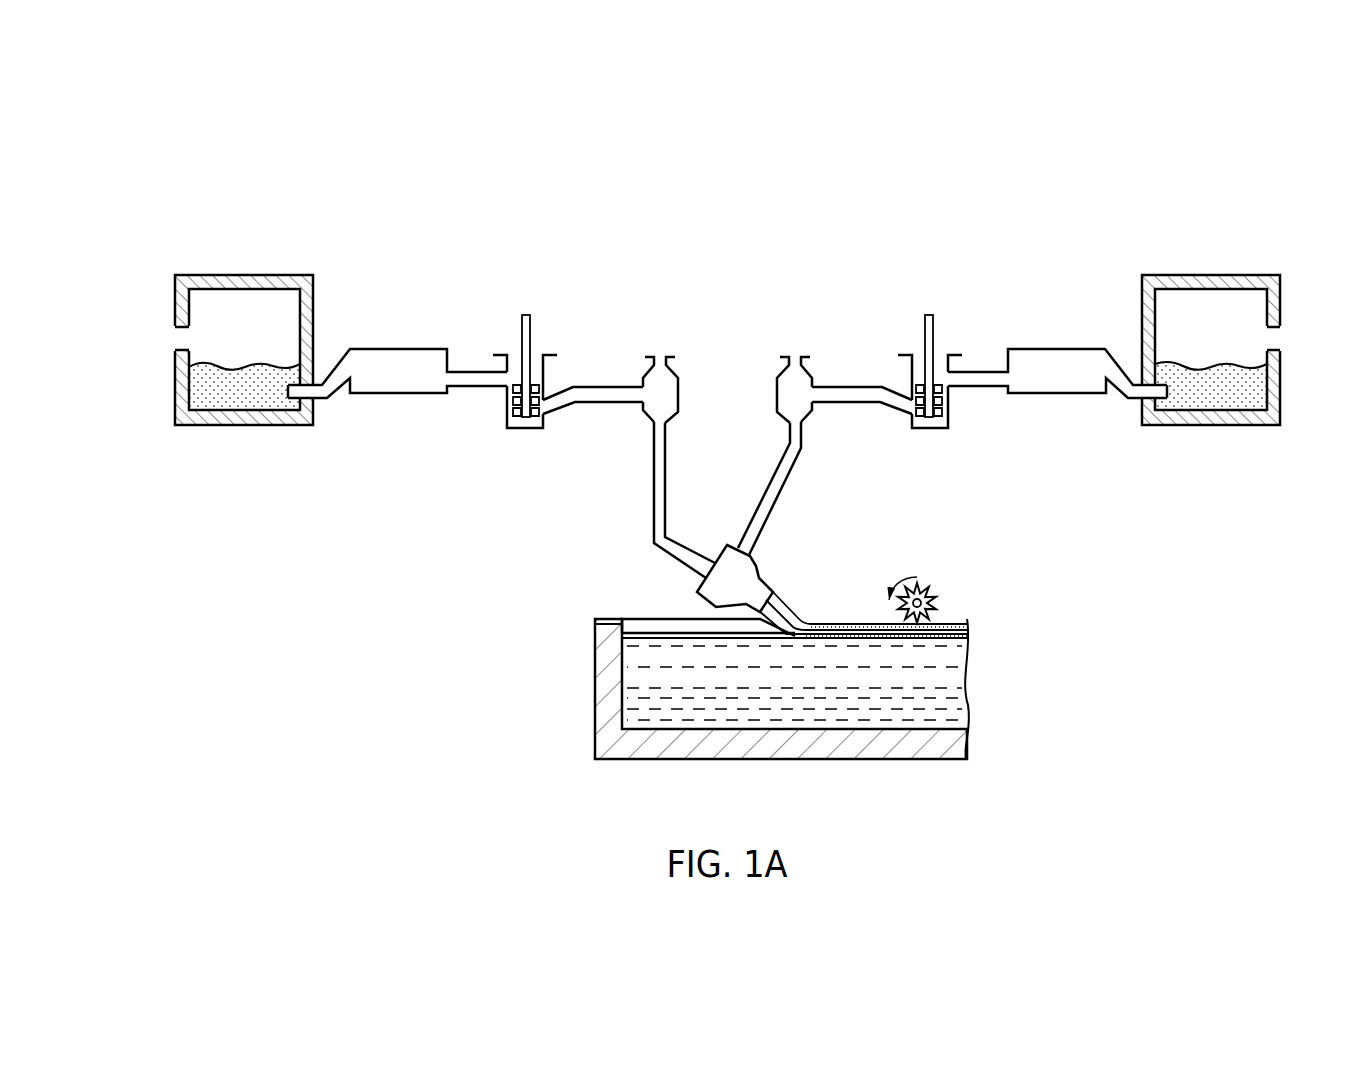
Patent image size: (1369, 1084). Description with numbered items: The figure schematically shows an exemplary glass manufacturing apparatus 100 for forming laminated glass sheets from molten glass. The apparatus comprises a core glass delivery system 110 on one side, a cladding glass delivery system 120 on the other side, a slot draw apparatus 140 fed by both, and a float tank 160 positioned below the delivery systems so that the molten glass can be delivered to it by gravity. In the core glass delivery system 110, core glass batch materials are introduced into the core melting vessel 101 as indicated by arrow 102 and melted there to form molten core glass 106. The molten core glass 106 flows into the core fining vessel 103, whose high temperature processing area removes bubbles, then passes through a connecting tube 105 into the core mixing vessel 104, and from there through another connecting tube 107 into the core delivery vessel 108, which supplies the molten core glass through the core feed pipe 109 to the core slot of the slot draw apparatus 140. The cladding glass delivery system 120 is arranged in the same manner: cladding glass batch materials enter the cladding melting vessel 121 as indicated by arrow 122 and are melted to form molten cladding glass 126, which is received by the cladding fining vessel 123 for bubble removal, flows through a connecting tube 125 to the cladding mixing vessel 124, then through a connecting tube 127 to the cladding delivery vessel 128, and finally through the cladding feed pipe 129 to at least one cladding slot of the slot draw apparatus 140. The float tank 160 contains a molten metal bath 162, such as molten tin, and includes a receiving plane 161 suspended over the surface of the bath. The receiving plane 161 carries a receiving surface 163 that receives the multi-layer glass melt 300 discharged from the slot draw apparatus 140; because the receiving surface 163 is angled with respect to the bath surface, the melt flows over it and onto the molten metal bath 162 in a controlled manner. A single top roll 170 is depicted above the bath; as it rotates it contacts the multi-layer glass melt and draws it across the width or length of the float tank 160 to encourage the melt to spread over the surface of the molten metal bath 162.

The glass manufacturing apparatus 100 is at (727, 457).
The core glass delivery system 110 is at (192, 298).
The core melting vessel 101 is at (176, 306).
The arrow 102 is at (131, 357).
The molten core glass 106 is at (243, 363).
The core fining vessel 103 is at (402, 349).
The core mixing vessel 104 is at (507, 415).
The connecting tube 105 is at (482, 372).
The connecting tube 107 is at (612, 387).
The core delivery vessel 108 is at (680, 404).
The core feed pipe 109 is at (654, 444).
The cladding glass delivery system 120 is at (1218, 330).
The cladding melting vessel 121 is at (1282, 299).
The arrow 122 is at (1315, 345).
The molten cladding glass 126 is at (1210, 363).
The cladding fining vessel 123 is at (1058, 395).
The cladding mixing vessel 124 is at (912, 376).
The connecting tube 125 is at (973, 372).
The connecting tube 127 is at (845, 405).
The cladding delivery vessel 128 is at (778, 383).
The cladding feed pipe 129 is at (790, 446).
The slot draw apparatus 140 is at (773, 548).
The float tank 160 is at (718, 690).
The receiving plane 161 is at (682, 590).
The molten metal bath 162 is at (664, 718).
The receiving surface 163 is at (775, 621).
The multi-layer glass melt 300 is at (886, 585).
The top roll 170 is at (963, 579).